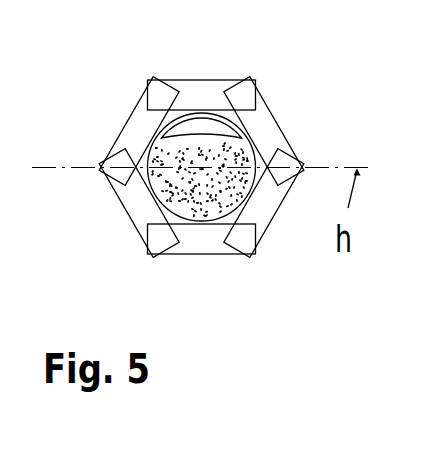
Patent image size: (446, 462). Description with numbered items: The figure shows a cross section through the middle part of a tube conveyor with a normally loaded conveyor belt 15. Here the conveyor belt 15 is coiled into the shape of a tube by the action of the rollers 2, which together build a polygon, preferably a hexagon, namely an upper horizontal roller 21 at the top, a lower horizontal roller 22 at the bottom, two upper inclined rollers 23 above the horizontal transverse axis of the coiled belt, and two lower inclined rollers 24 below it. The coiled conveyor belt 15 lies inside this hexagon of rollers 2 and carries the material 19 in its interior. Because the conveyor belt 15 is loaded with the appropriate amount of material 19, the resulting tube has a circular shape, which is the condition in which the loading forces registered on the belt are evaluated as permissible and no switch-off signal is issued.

The rollers 2 is at (231, 158).
The conveyor belt 15 is at (160, 134).
The material 19 is at (193, 187).
The upper horizontal roller 21 is at (200, 89).
The lower horizontal roller 22 is at (197, 242).
The upper inclined rollers 23 is at (145, 118).
The lower inclined rollers 24 is at (263, 208).